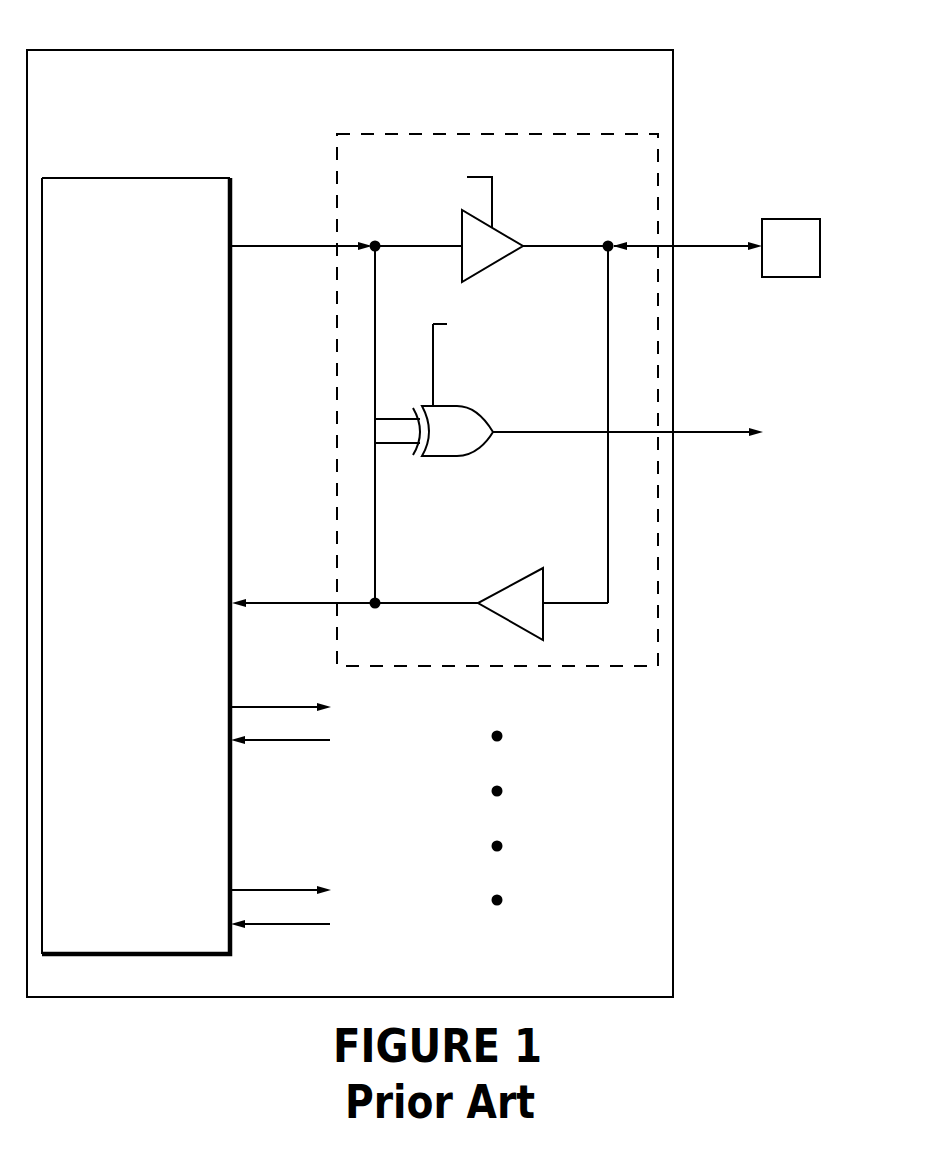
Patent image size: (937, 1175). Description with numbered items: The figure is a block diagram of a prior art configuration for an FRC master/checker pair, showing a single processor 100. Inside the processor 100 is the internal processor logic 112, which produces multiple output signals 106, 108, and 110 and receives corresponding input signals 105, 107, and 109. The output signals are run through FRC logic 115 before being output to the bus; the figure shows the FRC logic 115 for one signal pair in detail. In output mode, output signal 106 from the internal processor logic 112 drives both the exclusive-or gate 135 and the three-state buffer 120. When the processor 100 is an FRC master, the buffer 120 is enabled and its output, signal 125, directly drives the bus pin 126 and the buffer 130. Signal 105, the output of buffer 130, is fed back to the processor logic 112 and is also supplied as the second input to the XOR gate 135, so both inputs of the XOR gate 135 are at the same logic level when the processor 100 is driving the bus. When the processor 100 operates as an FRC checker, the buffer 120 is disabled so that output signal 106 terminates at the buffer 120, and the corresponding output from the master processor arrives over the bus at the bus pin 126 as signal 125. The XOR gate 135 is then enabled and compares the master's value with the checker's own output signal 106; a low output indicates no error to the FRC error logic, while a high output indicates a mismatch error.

The processor 100 is at (507, 49).
The FRC logic 115 is at (518, 133).
The internal processor logic 112 is at (157, 360).
The output signal 106 is at (273, 243).
The three-state buffer 120 is at (500, 233).
The exclusive-or (XOR) gate 135 is at (482, 419).
The buffer 130 is at (522, 581).
The input signal 105 is at (427, 605).
The signal 125 is at (733, 249).
The bus pin 126 is at (790, 278).
The output signal 108 is at (268, 705).
The input signal 107 is at (295, 742).
The output signal 110 is at (268, 888).
The input signal 109 is at (295, 926).